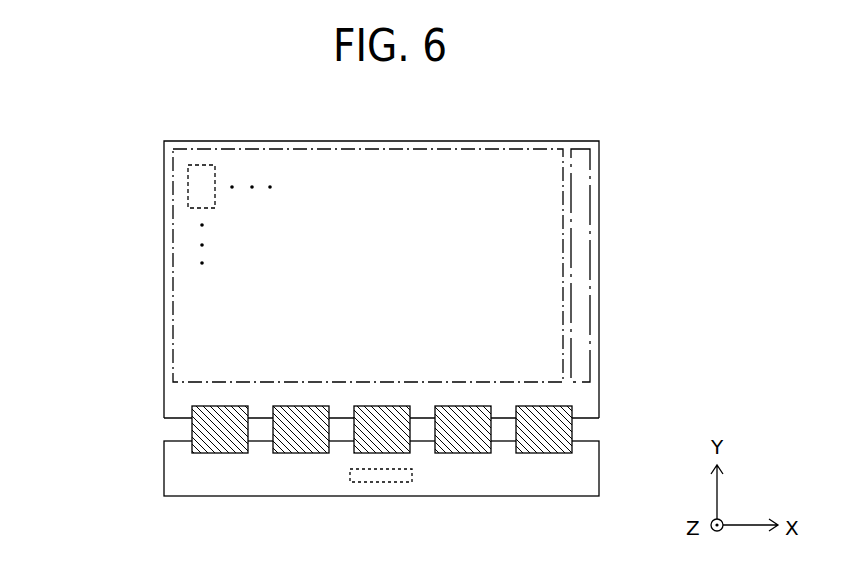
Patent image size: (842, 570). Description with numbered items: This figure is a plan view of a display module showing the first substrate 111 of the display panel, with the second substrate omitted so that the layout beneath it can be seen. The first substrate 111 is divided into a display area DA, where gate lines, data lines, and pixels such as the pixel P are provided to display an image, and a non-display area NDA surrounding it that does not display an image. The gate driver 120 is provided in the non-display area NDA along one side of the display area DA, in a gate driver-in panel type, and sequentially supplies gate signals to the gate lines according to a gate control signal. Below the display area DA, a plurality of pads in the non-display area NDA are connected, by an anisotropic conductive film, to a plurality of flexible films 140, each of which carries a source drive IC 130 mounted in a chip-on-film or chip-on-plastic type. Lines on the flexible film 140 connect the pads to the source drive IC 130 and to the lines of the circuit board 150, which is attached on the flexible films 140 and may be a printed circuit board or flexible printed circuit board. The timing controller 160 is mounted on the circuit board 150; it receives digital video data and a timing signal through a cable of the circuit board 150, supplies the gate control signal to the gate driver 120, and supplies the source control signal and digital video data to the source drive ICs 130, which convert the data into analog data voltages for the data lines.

The first substrate 111 is at (68, 348).
The display area DA is at (165, 362).
The non-display area NDA is at (165, 404).
The pixel P is at (188, 185).
The gate driver 120 is at (592, 222).
The source drive IC 130 is at (573, 420).
The flexible film 140 is at (573, 446).
The circuit board 150 is at (585, 481).
The timing controller 160 is at (380, 476).